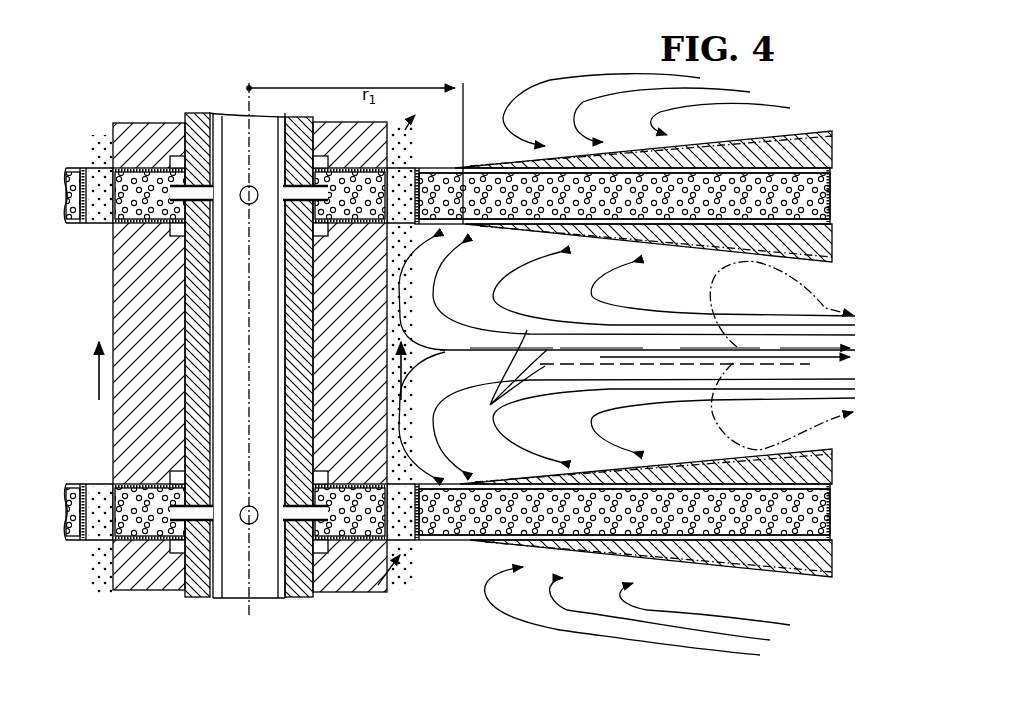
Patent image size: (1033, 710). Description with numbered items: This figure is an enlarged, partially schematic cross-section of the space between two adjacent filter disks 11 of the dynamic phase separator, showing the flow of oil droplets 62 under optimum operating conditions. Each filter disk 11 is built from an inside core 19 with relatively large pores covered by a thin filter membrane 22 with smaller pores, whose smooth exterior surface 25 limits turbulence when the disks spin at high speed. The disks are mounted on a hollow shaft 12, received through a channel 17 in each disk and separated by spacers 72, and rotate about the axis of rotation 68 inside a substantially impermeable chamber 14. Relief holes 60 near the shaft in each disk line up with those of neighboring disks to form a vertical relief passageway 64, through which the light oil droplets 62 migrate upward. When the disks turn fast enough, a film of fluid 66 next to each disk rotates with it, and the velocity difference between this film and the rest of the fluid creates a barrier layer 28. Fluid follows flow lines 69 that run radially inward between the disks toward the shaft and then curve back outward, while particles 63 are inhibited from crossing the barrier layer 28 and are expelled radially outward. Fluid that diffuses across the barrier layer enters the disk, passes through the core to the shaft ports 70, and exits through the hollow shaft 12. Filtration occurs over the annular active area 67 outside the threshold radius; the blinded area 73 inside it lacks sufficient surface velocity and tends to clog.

The filter disk 11 is at (548, 158).
The hollow shaft 12 is at (298, 598).
The chamber 14 is at (426, 418).
The channel 17 is at (250, 288).
The inside core 19 is at (712, 185).
The filter membrane 22 is at (607, 156).
The exterior surface 25 is at (815, 145).
The barrier layer 28 is at (735, 290).
The relief hole 60 is at (100, 222).
The oil droplets 62 is at (95, 138).
The particles 63 is at (853, 327).
The relief passageway 64 is at (99, 365).
The film of fluid 66 is at (790, 150).
The active area 67 is at (735, 222).
The axis of rotation 68 is at (252, 86).
The flow lines 69 is at (492, 292).
The shaft ports 70 is at (283, 203).
The spacer 72 is at (368, 650).
The blinded area 73 is at (440, 218).